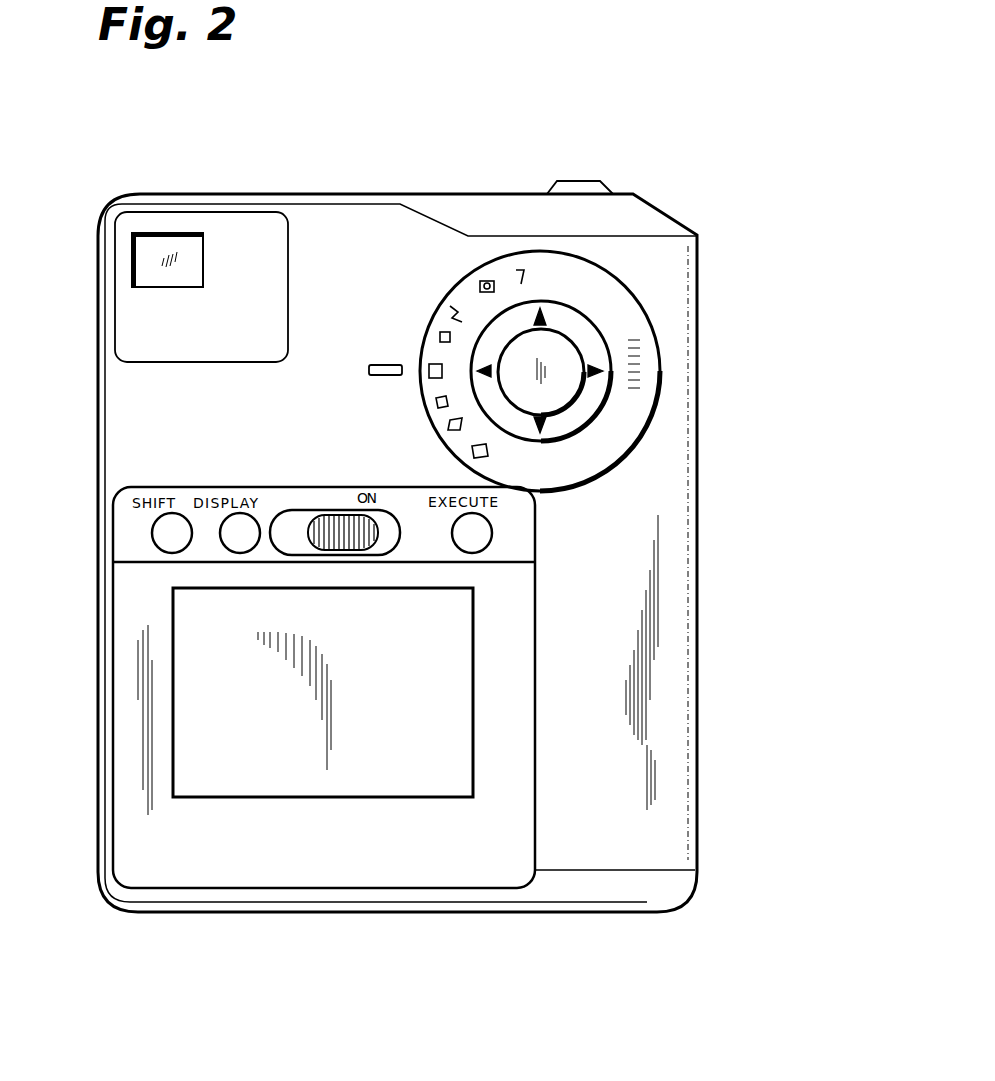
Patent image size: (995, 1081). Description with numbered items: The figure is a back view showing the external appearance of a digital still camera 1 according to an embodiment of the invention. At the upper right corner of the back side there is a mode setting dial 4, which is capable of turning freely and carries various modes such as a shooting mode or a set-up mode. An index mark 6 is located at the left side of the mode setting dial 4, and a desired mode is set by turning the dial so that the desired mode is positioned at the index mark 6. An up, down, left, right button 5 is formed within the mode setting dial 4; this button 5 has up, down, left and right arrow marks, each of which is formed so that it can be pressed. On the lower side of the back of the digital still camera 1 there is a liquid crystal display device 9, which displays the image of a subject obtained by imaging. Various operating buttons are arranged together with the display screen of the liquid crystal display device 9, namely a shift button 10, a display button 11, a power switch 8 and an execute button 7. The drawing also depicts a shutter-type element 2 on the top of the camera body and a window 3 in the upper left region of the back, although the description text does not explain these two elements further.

The digital still camera 1 is at (752, 208).
The shutter release button 2 is at (580, 186).
The viewfinder 3 is at (156, 243).
The mode setting dial 4 is at (625, 318).
The up, down, left, right button 5 is at (592, 408).
The index mark 6 is at (386, 365).
The execute button 7 is at (472, 533).
The power switch 8 is at (318, 500).
The liquid crystal display device 9 is at (433, 673).
The shift button 10 is at (162, 531).
The display button 11 is at (273, 500).